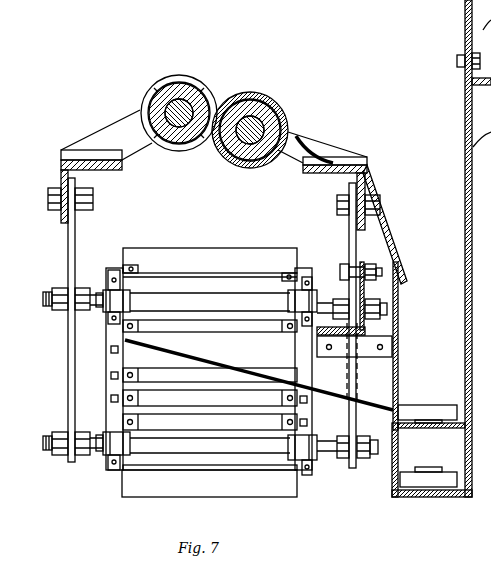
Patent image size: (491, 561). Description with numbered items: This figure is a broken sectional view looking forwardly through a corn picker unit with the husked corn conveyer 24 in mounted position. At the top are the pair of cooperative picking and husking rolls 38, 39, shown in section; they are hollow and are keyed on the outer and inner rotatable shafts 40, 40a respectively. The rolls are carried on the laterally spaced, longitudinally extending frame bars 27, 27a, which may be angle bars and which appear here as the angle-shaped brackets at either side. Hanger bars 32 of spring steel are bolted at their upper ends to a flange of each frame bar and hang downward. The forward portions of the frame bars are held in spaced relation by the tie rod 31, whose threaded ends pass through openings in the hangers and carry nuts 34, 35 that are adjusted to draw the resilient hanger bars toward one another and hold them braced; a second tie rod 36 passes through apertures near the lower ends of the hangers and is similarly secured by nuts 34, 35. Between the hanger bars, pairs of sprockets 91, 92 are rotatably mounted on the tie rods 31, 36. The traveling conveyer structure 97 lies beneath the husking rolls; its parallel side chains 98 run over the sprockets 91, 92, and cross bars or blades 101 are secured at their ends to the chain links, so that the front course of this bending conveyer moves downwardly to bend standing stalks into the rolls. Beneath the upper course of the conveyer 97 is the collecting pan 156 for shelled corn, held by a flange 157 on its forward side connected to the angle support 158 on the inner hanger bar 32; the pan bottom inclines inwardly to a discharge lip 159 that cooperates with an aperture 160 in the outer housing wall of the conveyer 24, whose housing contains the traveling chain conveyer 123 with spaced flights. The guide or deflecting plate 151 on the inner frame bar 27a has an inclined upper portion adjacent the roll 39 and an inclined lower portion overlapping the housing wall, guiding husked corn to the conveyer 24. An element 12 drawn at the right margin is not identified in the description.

The wall 12 is at (473, 392).
The husked corn conveyer 24 is at (430, 303).
The frame bar 27 is at (112, 171).
The inner frame bar 27a is at (317, 172).
The tie rod 31 is at (213, 298).
The hanger bar 32 is at (75, 235).
The nut 34 is at (60, 288).
The nut 35 is at (84, 288).
The second tie rod 36 is at (228, 449).
The picking and husking roll 38 is at (160, 92).
The picking and husking roll 39 is at (273, 106).
The outer rotatable shaft 40 is at (187, 97).
The inner rotatable shaft 40a is at (250, 113).
The sprocket 91 is at (107, 320).
The sprocket 92 is at (110, 467).
The traveling conveyer structure 97 is at (232, 241).
The side chain 98 is at (106, 378).
The cross bar 101 is at (157, 488).
The traveling chain conveyer 123 is at (432, 462).
The guide or deflecting plate 151 is at (372, 172).
The collecting pan 156 is at (266, 361).
The flange 157 is at (373, 357).
The angle support 158 is at (362, 266).
The discharge lip 159 is at (399, 404).
The aperture 160 is at (395, 387).